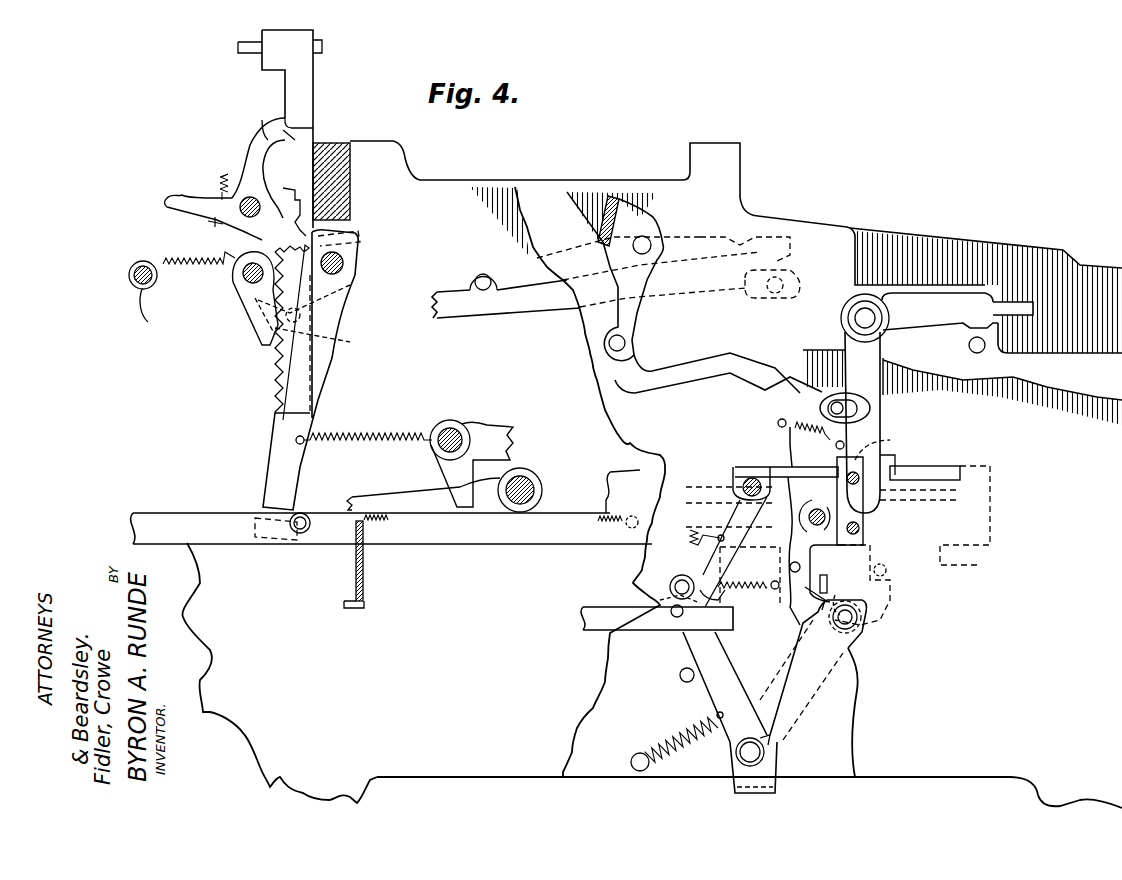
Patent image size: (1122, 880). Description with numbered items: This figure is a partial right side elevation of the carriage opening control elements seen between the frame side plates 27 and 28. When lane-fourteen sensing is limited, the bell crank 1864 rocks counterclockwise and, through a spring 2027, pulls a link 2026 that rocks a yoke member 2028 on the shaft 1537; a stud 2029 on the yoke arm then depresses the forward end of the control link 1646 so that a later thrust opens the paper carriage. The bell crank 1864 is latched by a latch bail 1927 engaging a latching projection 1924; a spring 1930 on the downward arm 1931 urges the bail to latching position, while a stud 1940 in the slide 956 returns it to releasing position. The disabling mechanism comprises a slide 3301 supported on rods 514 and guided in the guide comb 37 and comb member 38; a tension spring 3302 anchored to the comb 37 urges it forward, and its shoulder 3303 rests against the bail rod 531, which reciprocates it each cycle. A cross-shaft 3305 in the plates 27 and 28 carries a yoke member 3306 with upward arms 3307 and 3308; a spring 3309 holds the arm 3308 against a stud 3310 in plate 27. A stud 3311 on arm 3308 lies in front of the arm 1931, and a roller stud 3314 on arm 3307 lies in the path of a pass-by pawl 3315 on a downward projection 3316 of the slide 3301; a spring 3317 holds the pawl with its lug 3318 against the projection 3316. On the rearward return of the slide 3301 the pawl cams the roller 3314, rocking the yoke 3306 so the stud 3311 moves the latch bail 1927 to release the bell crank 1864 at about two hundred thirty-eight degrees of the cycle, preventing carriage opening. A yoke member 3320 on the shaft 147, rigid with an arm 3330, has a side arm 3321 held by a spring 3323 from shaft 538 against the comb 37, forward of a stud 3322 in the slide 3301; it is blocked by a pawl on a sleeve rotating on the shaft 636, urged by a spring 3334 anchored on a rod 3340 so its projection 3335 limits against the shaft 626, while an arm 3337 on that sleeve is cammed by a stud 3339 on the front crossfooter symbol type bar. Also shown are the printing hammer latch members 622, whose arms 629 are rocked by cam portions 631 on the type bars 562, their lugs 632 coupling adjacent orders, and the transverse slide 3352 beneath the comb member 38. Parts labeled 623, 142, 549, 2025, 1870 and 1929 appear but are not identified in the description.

The left side frame plate 28 is at (443, 187).
The right side frame plate 27 is at (548, 195).
The type bar 562 is at (314, 73).
The cam portion 631 is at (300, 128).
The upwardly extending arm 629 is at (262, 135).
The printing hammer latch member 622 is at (250, 155).
The arm 623 is at (180, 200).
The shaft 626 is at (256, 201).
The lug 632 is at (208, 221).
The frame block 142 is at (340, 178).
The rear upward projection 3335 is at (305, 208).
The yoke member 3320 is at (335, 232).
The tension spring 3334 is at (180, 255).
The rod 3340 is at (148, 318).
The shaft 636 is at (243, 275).
The arm 3337 is at (245, 318).
The arm 3330 is at (320, 312).
The stud 3339 is at (318, 335).
The side arm 3321 is at (325, 372).
The shaft 147 is at (348, 263).
The tension spring 3323 is at (364, 424).
The shaft 538 is at (452, 428).
The lever 549 is at (490, 435).
The bail rod 531 is at (528, 480).
The shoulder 3303 is at (620, 478).
The stud 3322 is at (310, 528).
The tension spring 3302 is at (598, 521).
The slide 3301 is at (445, 538).
The guide comb 37 is at (364, 577).
The control link 1646 is at (490, 310).
The stud 2029 is at (480, 278).
The yoke member 2028 is at (628, 186).
The shaft 1537 is at (648, 242).
The stud 1940 is at (785, 262).
The link 2026 is at (730, 363).
The slotted head 2025 is at (870, 410).
The pivot 1870 is at (863, 316).
The bell crank 1864 is at (925, 320).
The comb member 38 is at (880, 437).
The spring 2027 is at (782, 427).
The latch bail 1927 is at (783, 460).
The pivot 1929 is at (740, 488).
The spring 1930 is at (729, 516).
The downward arm 1931 is at (705, 558).
The stud 3311 is at (670, 583).
The slide 956 is at (583, 620).
The tension spring 3317 is at (740, 596).
The slide 3352 is at (895, 468).
The latching projection 1924 is at (866, 490).
The rod 514 is at (866, 515).
The downward projection 3316 is at (820, 553).
The lateral lug 3318 is at (827, 578).
The pass-by pawl 3315 is at (828, 590).
The roller stud 3314 is at (862, 630).
The arm 3307 is at (850, 660).
The arm 3308 is at (700, 648).
The stud 3310 is at (680, 675).
The tension spring 3309 is at (693, 732).
The cross-shaft 3305 is at (763, 752).
The yoke member 3306 is at (735, 795).